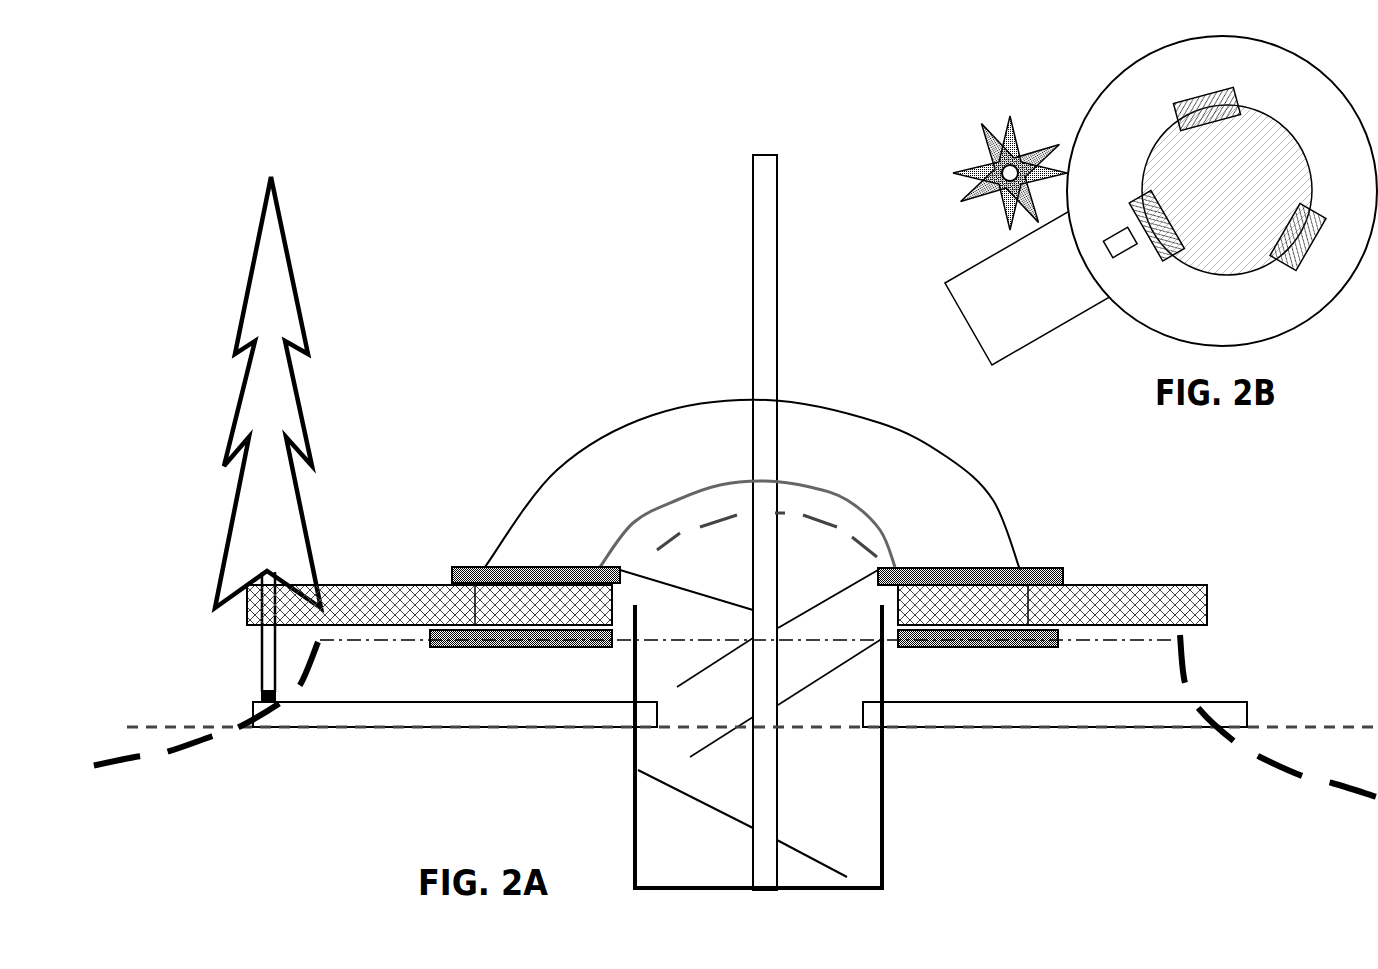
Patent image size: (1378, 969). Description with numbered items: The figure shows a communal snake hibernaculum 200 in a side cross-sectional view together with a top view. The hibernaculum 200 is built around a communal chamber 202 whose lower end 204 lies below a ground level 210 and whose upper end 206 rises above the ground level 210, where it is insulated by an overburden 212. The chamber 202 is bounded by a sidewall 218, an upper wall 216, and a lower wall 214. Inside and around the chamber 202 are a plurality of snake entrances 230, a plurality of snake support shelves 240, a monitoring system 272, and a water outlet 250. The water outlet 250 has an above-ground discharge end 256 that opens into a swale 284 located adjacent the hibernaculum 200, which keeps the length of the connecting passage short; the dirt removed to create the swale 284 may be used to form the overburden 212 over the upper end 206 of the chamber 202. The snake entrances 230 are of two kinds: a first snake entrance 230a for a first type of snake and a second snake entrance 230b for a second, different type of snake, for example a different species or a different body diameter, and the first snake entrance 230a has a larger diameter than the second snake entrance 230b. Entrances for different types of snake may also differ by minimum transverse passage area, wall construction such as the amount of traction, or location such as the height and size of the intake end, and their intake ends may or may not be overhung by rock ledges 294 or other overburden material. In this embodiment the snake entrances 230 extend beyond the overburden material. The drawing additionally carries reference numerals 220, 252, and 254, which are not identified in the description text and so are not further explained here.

In FIG. 2A, the communal snake hibernaculum 200 is at (488, 447).
In FIG. 2B, the communal snake hibernaculum 200 is at (993, 90).
In FIG. 2A, the communal chamber 202 is at (830, 790).
In FIG. 2A, the lower end 204 is at (902, 837).
In FIG. 2A, the upper end 206 is at (860, 490).
In FIG. 2A, the ground level 210 is at (1130, 637).
In FIG. 2A, the overburden 212 is at (817, 407).
In FIG. 2B, the overburden 212 is at (1168, 157).
In FIG. 2A, the lower wall 214 is at (858, 890).
In FIG. 2A, the upper wall 216 is at (672, 535).
In FIG. 2A, the sidewall 218 is at (638, 828).
In FIG. 2A, the baffle 220 is at (640, 798).
In FIG. 2A, the snake entrances 230 is at (348, 585).
In FIG. 2A, the first snake entrance 230a is at (1193, 585).
In FIG. 2A, the second snake entrance 230b is at (402, 585).
In FIG. 2A, the snake support shelves 240 is at (827, 602).
In FIG. 2A, the water outlet 250 is at (435, 702).
In FIG. 2B, the water outlet 250 is at (1125, 243).
In FIG. 2A, the lower surface 252 is at (1067, 713).
In FIG. 2A, the gap 254 is at (897, 690).
In FIG. 2A, the above-ground discharge end 256 is at (1210, 737).
In FIG. 2A, the monitoring system 272 is at (733, 190).
In FIG. 2A, the swale 284 is at (138, 647).
In FIG. 2B, the swale 284 is at (1027, 363).
In FIG. 2A, the rock ledges 294 is at (533, 567).